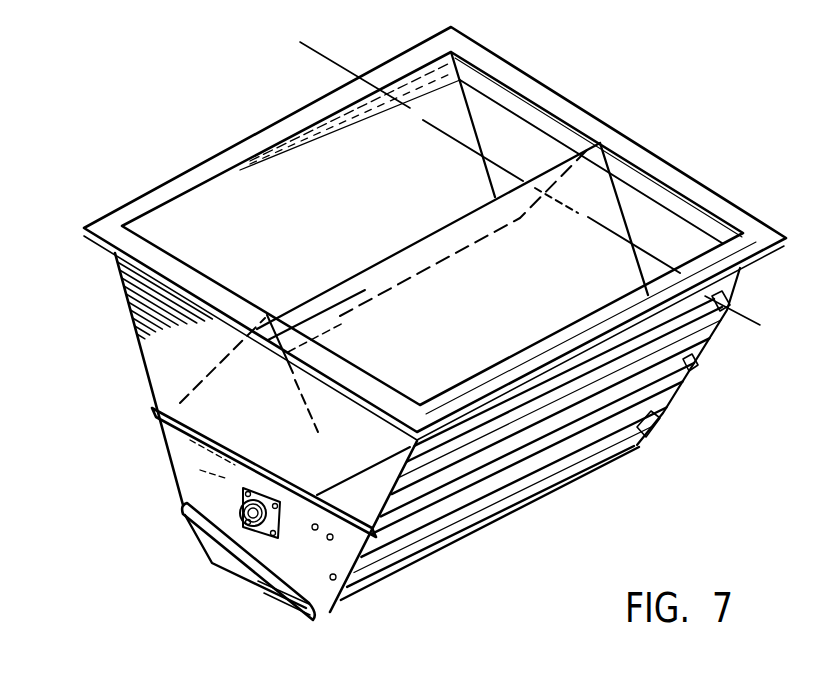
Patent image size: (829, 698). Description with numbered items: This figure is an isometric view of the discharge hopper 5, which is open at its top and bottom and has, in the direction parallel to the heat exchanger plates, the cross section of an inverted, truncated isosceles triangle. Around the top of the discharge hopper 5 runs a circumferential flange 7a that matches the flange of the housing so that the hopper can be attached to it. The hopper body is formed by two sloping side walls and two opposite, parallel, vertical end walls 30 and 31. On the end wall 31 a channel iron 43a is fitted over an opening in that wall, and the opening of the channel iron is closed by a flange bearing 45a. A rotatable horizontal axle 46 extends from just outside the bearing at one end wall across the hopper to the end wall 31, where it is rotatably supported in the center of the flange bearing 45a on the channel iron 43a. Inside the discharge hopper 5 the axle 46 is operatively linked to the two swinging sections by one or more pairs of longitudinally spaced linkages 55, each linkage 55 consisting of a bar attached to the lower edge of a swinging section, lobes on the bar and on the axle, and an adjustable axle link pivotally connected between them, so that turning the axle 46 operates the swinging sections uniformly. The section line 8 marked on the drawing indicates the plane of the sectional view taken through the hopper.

The discharge hopper 5 is at (90, 390).
The circumferential flange 7a is at (157, 186).
The section line 8- 8 is at (385, 27).
The end wall 30 is at (665, 227).
The end wall 31 is at (266, 597).
The channel iron 43a is at (265, 594).
The flange bearing 45a is at (258, 563).
The axle 46 is at (250, 523).
The linkage 55 is at (205, 497).